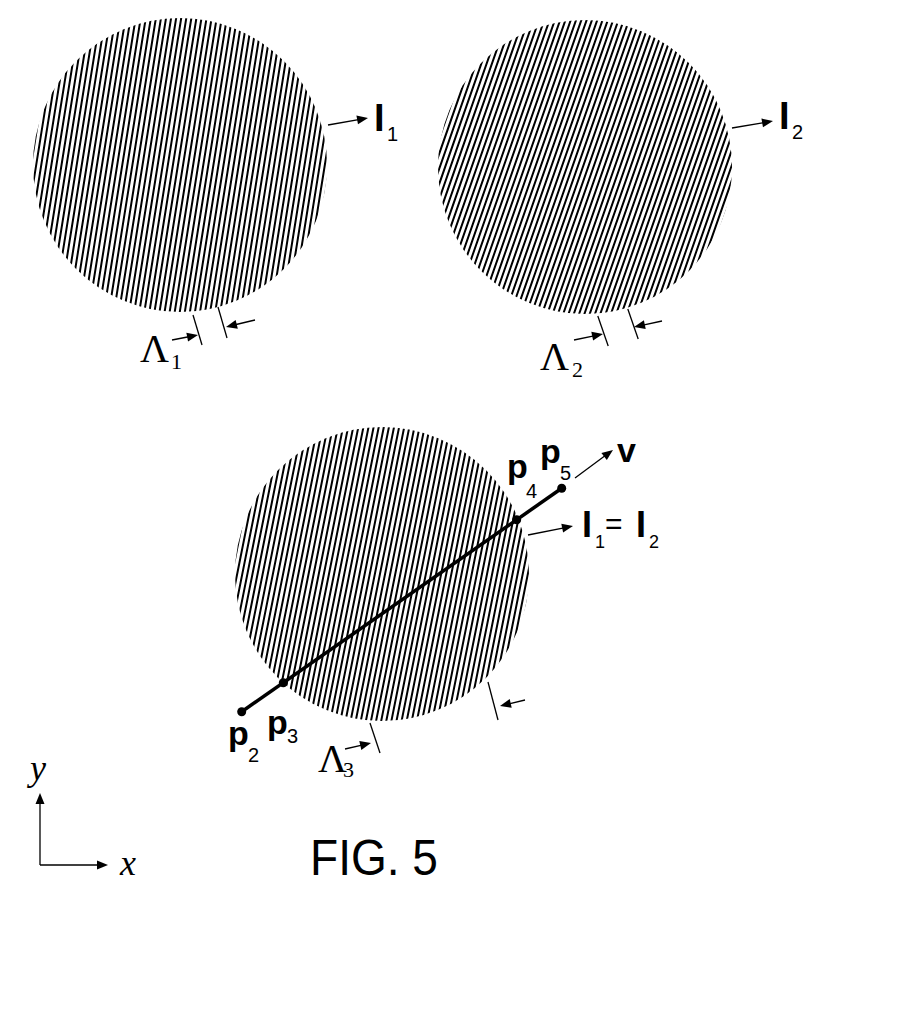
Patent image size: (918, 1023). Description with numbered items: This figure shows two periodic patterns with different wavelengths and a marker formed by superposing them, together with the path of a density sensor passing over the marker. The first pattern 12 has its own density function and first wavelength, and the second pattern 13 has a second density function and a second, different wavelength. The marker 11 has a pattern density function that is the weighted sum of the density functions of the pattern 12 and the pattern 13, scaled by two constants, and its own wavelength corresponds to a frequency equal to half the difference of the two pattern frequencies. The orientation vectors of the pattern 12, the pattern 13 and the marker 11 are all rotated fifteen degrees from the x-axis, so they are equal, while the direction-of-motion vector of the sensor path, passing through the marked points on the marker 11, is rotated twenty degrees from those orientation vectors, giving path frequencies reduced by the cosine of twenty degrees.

The marker 11 is at (285, 476).
The pattern 12 is at (277, 271).
The pattern 13 is at (690, 268).